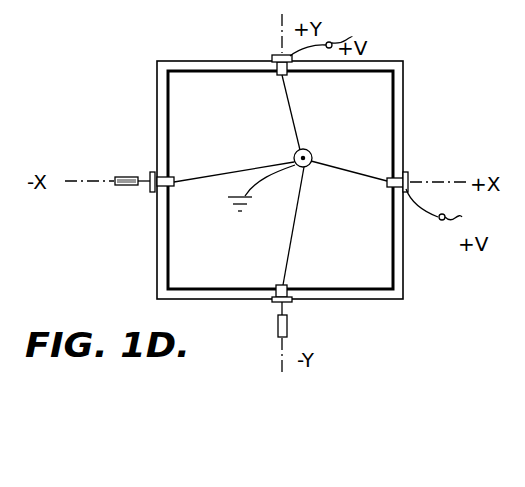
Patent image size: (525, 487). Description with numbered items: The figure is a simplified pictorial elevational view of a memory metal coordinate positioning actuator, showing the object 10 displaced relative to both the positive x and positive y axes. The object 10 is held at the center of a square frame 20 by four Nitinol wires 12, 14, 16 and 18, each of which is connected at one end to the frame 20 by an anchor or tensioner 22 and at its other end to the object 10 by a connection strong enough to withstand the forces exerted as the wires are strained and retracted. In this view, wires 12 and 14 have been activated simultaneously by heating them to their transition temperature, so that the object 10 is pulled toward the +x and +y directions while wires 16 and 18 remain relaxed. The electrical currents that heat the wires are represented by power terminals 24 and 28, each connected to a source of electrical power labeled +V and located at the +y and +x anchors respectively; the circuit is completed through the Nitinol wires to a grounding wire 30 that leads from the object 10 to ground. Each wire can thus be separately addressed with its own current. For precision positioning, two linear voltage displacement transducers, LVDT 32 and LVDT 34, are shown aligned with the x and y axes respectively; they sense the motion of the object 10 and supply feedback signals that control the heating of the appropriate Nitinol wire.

The object 10 is at (310, 165).
The Nitinol wire 12 is at (332, 167).
The Nitinol wire 14 is at (296, 118).
The Nitinol wire 16 is at (232, 172).
The Nitinol wire 18 is at (290, 252).
The frame 20 is at (397, 89).
The anchor or tensioner 22 is at (275, 57).
The power terminal 24 is at (336, 34).
The power terminal 28 is at (452, 209).
The grounding wire 30 is at (250, 190).
The LVDT 32 is at (122, 177).
The LVDT 34 is at (278, 330).